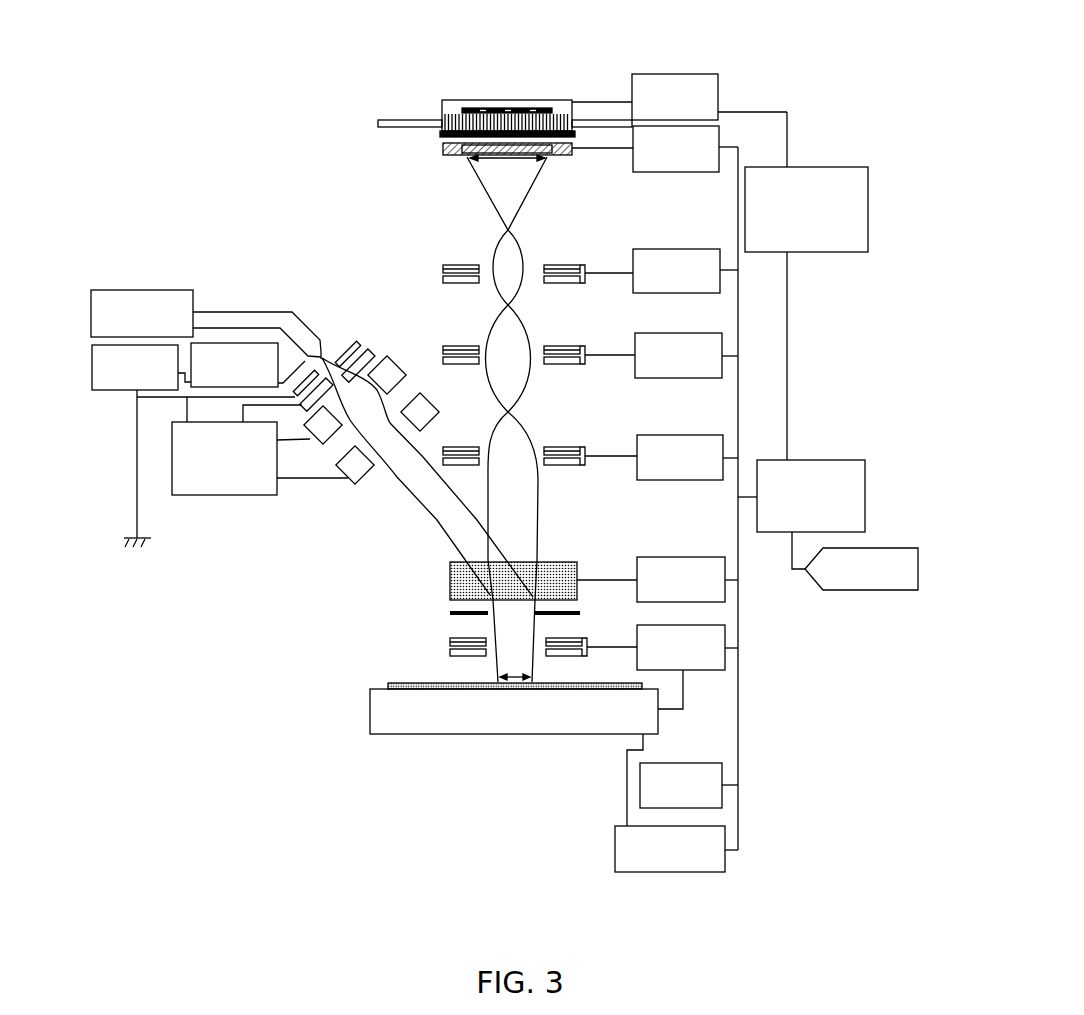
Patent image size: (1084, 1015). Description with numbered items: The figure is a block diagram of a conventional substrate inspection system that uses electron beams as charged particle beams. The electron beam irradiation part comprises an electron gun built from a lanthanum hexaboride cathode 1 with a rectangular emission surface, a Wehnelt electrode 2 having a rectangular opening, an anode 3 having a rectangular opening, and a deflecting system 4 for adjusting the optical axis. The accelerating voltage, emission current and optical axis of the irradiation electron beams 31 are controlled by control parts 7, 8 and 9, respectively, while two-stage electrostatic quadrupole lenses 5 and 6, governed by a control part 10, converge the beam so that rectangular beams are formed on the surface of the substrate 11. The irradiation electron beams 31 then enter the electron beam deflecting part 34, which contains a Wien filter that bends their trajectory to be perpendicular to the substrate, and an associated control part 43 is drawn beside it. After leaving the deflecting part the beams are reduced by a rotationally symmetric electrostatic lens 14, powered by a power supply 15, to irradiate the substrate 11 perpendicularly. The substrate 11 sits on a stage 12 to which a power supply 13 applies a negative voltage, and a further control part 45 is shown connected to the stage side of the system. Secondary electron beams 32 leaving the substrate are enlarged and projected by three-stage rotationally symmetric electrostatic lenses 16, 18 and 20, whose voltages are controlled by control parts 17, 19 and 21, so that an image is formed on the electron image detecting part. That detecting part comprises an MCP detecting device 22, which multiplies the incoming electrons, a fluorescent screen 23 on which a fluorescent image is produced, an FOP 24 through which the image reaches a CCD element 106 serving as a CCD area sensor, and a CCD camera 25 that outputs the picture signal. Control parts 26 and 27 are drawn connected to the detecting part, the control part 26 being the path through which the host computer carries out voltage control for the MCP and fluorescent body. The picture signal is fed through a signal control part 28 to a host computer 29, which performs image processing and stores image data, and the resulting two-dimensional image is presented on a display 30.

The LaB6 cathode 1 is at (323, 340).
The Wehnelt electrode 2 is at (350, 340).
The anode 3 is at (365, 345).
The deflecting system 4 is at (378, 352).
The electrostatic quadrupole lens 5 is at (403, 358).
The electrostatic quadrupole lens 6 is at (432, 407).
The control part 7 is at (150, 290).
The control part 8 is at (121, 390).
The control part 9 is at (243, 343).
The control part 10 is at (226, 495).
The substrate 11 is at (388, 686).
The stage 12 is at (370, 714).
The power supply 13 is at (640, 788).
The rotationally symmetric electrostatic lens 14 is at (543, 639).
The power supply 15 is at (688, 670).
The electrostatic lens 16 is at (540, 447).
The control part 17 is at (693, 435).
The electrostatic lens 18 is at (539, 347).
The control part 19 is at (693, 333).
The electrostatic lens 20 is at (538, 260).
The control part 21 is at (693, 249).
The MCP detecting device 22 is at (443, 150).
The fluorescent screen 23 is at (440, 134).
The FOP 24 is at (442, 117).
The CCD camera 25 is at (442, 102).
The control part 26 is at (633, 168).
The control part 27 is at (672, 74).
The signal control part 28 is at (812, 167).
The host computer 29 is at (835, 460).
The display 30 is at (855, 590).
The irradiation electron beams 31 is at (410, 490).
The secondary electron beams 32 is at (488, 488).
The electron beam deflecting part 34 is at (570, 562).
The control part 43 is at (692, 557).
The control part 45 is at (615, 850).
The CCD element 106 is at (538, 108).